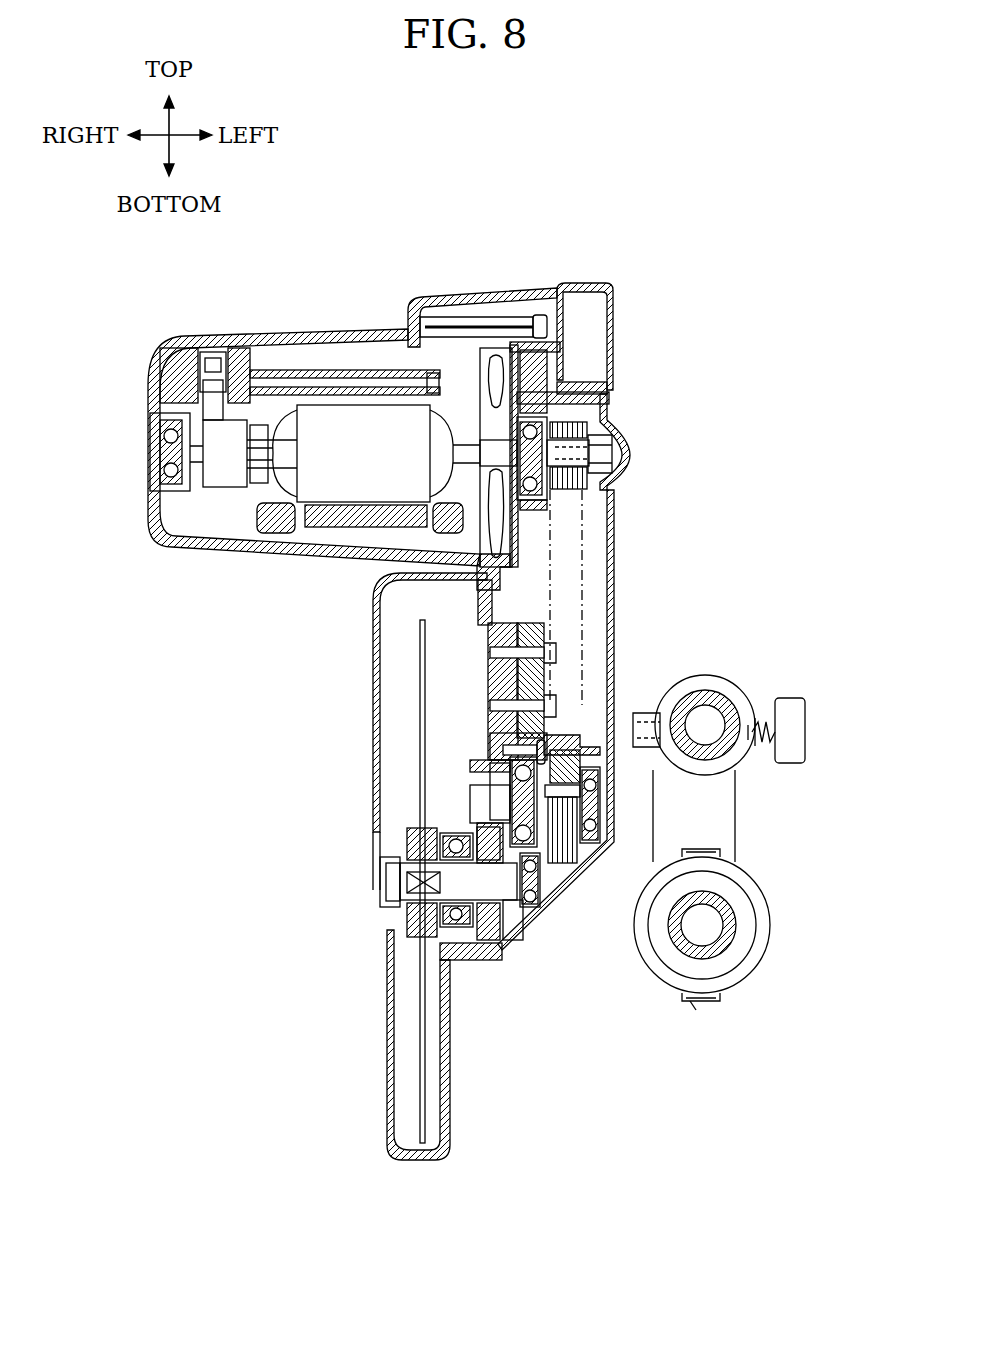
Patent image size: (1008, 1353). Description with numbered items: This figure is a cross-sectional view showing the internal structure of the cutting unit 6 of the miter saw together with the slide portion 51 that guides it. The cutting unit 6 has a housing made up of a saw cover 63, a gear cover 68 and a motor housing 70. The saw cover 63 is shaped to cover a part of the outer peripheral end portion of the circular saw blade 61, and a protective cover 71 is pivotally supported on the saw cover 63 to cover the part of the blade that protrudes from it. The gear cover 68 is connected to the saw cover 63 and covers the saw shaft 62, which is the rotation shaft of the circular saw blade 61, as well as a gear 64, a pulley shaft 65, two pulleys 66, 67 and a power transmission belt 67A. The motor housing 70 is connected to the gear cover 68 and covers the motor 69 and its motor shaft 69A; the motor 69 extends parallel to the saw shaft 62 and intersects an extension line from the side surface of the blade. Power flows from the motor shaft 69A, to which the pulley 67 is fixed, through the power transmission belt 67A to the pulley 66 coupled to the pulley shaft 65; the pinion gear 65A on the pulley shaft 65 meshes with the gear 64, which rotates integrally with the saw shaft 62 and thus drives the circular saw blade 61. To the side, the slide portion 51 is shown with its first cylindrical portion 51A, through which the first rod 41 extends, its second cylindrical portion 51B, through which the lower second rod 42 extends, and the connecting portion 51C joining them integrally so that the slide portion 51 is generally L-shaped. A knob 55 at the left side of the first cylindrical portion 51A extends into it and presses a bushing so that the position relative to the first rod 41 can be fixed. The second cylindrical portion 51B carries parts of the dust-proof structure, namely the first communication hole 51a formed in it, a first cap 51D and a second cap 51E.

The cutting unit 6 is at (610, 286).
The motor housing 70 is at (285, 340).
The motor 69 is at (382, 448).
The motor shaft 69A is at (500, 450).
The pulley 67 is at (583, 487).
The power transmission belt 67A is at (562, 556).
The gear cover 68 is at (615, 572).
The saw cover 63 is at (378, 672).
The pinion gear 65A is at (470, 778).
The pulley shaft 65 is at (505, 797).
The pulley 66 is at (580, 880).
The gear 64 is at (515, 950).
The saw shaft 62 is at (452, 885).
The circular saw blade 61 is at (418, 1062).
The protective cover 71 is at (447, 1103).
The slide portion 51 is at (753, 849).
The first cylindrical portion 51A is at (717, 686).
The first rod 41 is at (722, 752).
The connecting portion 51C is at (702, 812).
The knob 55 is at (800, 730).
The second cylindrical portion 51B is at (760, 932).
The second rod 42 is at (725, 965).
The second cap 51E is at (718, 850).
The first cap 51D is at (695, 990).
The first communication hole 51a is at (712, 960).